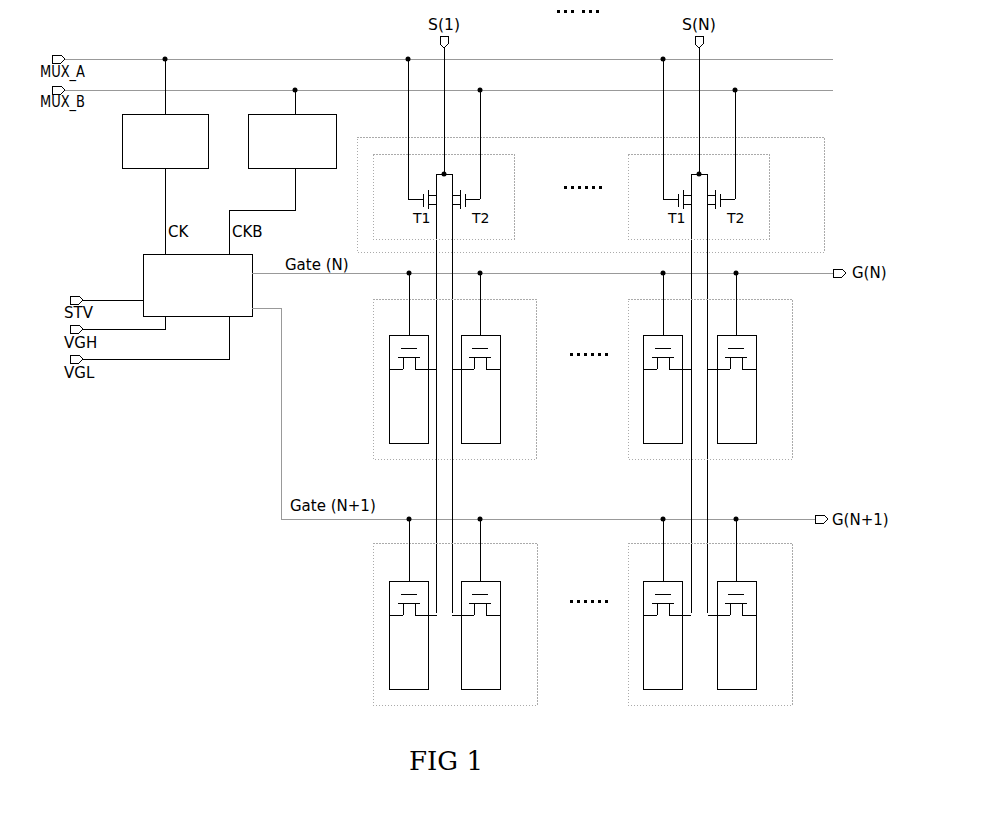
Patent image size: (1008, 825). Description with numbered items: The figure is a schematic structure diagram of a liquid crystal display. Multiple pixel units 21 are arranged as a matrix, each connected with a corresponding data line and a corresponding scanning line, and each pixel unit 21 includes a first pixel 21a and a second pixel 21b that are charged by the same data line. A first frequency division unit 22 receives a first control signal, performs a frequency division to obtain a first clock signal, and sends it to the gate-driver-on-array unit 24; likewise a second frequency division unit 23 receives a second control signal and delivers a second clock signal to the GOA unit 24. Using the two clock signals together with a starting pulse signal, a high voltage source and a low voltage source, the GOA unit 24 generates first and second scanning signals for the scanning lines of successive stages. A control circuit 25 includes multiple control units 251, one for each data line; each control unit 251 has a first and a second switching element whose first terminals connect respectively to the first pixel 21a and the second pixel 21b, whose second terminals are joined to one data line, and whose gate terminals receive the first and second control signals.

The pixel unit 21 is at (515, 297).
The first pixel 21a is at (402, 334).
The second pixel 21b is at (498, 334).
The first frequency division unit 22 is at (210, 133).
The second frequency division unit 23 is at (338, 133).
The gate-driver-on-array (GOA) unit 24 is at (252, 262).
The control unit 25 is at (775, 137).
The control unit 251 is at (514, 188).